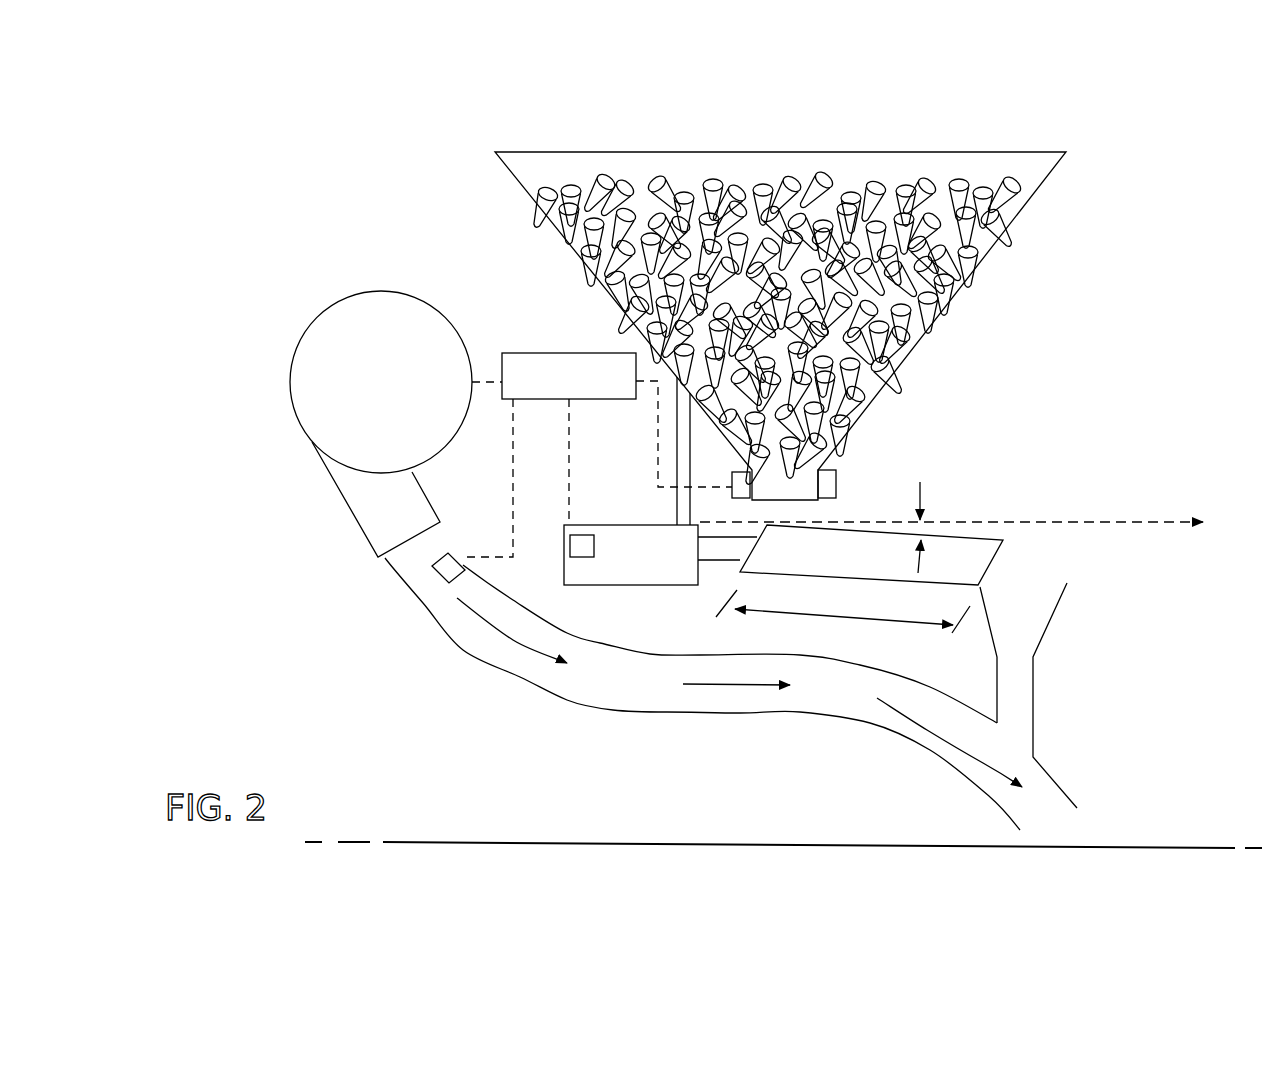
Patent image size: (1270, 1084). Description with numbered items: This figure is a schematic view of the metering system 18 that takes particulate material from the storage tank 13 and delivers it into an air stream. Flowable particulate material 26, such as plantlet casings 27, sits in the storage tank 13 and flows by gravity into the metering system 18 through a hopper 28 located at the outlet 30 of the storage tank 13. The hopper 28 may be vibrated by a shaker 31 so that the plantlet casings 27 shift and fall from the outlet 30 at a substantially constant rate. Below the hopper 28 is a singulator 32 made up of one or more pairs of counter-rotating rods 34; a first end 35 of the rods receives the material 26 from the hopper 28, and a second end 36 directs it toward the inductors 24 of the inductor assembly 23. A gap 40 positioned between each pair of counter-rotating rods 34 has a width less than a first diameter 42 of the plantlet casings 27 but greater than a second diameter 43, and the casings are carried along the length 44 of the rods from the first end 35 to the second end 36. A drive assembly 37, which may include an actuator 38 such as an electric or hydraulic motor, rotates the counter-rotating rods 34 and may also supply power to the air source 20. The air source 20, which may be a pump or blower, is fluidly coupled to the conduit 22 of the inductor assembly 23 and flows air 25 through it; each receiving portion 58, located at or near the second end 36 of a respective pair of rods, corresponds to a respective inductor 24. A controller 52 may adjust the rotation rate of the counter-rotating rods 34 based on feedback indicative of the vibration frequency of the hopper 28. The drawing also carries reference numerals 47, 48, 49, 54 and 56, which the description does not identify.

The storage tank 13 is at (581, 258).
The metering system 18 is at (1175, 272).
The air source 20 is at (320, 325).
The conduit 22 is at (517, 673).
The inductor assembly 23 is at (1170, 602).
The inductor 24 is at (1075, 742).
The air 25 is at (503, 635).
The flowable particulate material 26 is at (950, 186).
The plantlet casings 27 is at (565, 215).
The hopper 28 is at (770, 486).
The outlet 30 is at (840, 462).
The shaker 31 is at (838, 483).
The singulator 32 is at (1010, 501).
The counter-rotating rods 34 is at (1005, 540).
The first end 35 is at (722, 571).
The second end 36 is at (962, 595).
The drive assembly 37 is at (625, 585).
The actuator 38 is at (568, 545).
The gap 40 is at (975, 530).
The first diameter 42 is at (623, 173).
The second diameter 43 is at (613, 217).
The length 44 is at (840, 612).
The plate height 47 is at (920, 482).
The reference plane 48 is at (951, 505).
The ground surface 49 is at (1135, 858).
The controller 52 is at (540, 353).
The flow sensor 54 is at (440, 578).
The hopper sensor 56 is at (740, 498).
The receiving portion 58 is at (1035, 585).